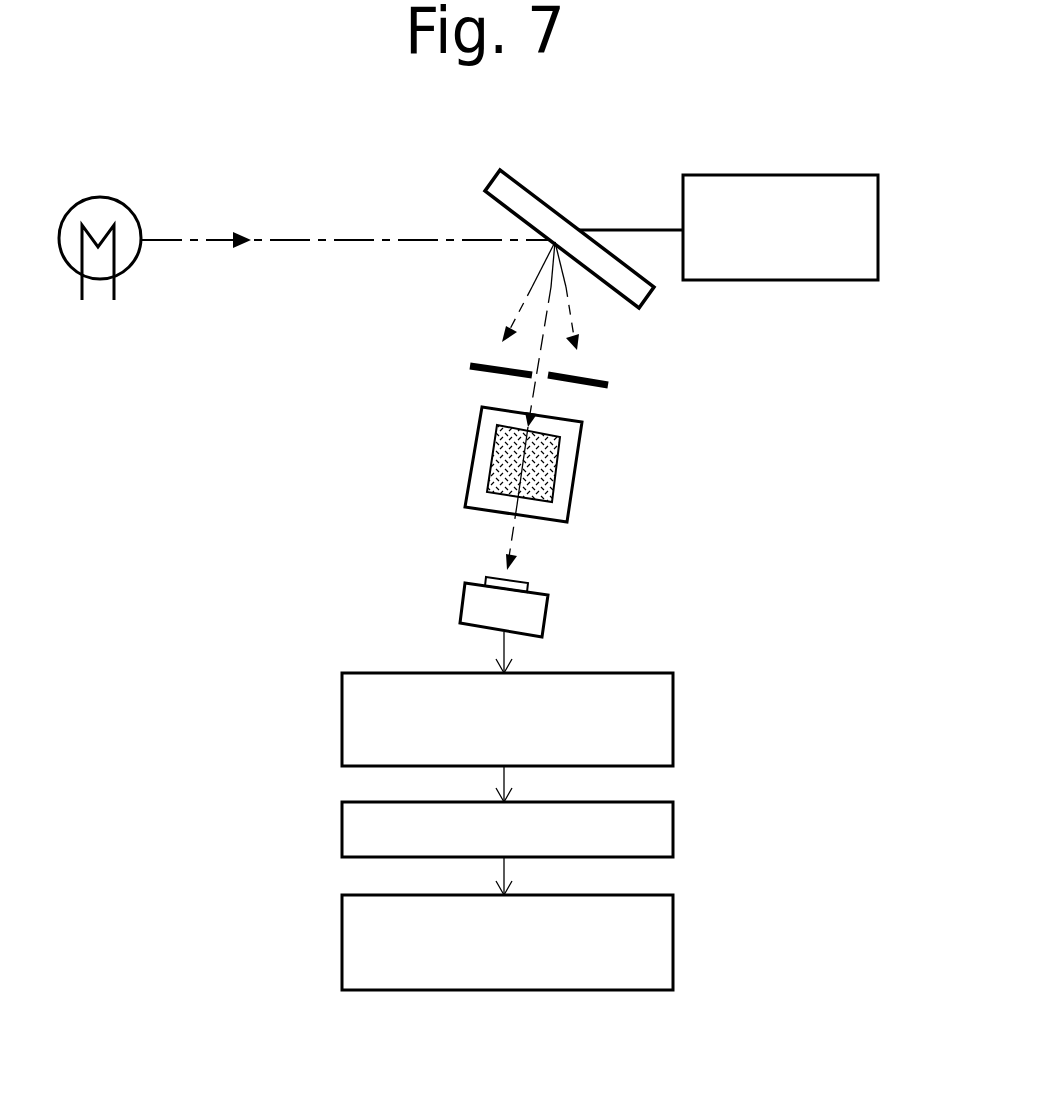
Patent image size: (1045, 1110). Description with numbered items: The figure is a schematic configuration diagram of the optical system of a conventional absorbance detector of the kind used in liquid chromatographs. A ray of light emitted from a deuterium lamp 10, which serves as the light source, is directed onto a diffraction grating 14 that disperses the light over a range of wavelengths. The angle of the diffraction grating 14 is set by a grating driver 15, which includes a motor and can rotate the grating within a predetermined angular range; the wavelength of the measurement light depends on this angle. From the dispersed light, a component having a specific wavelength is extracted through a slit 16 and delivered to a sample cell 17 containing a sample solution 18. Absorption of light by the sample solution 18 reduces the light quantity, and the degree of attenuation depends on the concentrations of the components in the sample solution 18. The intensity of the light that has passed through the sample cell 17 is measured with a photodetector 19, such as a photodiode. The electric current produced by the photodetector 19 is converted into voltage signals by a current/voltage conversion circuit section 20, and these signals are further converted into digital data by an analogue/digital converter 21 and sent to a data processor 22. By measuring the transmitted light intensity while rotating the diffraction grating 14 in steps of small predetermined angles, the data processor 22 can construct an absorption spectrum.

The deuterium lamp 10 is at (132, 211).
The diffraction grating 14 is at (523, 188).
The grating driver 15 is at (793, 174).
The slit 16 is at (593, 378).
The sample cell 17 is at (573, 485).
The sample solution 18 is at (487, 477).
The photodetector 19 is at (545, 608).
The current/voltage (I/V) conversion circuit section 20 is at (675, 697).
The analogue/digital (A/D) converter 21 is at (675, 822).
The data processor 22 is at (675, 930).